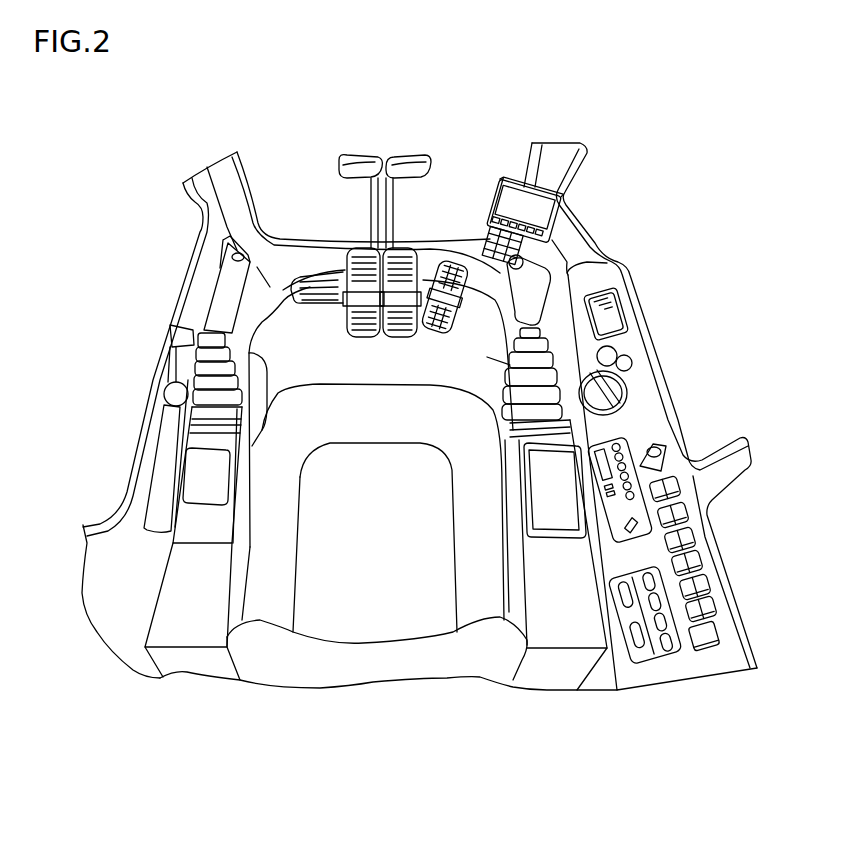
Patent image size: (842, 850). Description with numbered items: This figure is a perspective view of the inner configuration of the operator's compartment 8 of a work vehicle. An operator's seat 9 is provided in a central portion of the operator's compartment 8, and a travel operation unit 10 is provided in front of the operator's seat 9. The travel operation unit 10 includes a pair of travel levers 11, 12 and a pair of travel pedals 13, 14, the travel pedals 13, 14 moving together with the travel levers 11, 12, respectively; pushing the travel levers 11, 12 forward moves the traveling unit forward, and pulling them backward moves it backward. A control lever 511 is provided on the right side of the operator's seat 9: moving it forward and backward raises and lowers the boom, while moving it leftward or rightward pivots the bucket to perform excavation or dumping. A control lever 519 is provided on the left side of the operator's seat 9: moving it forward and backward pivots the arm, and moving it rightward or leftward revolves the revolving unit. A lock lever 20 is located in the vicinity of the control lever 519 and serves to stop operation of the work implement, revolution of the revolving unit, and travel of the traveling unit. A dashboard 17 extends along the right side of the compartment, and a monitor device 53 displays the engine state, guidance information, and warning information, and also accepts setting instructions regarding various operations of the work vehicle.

The operator's compartment 8 is at (622, 148).
The operator's seat 9 is at (370, 625).
The travel operation unit 10 is at (382, 151).
The travel lever 11 is at (353, 157).
The travel lever 12 is at (416, 157).
The travel pedal 13 is at (370, 337).
The travel pedal 14 is at (395, 337).
The dashboard 17 is at (652, 418).
The lock lever 20 is at (175, 328).
The monitor device 53 is at (503, 182).
The control lever 511 is at (533, 277).
The control lever 519 is at (225, 280).